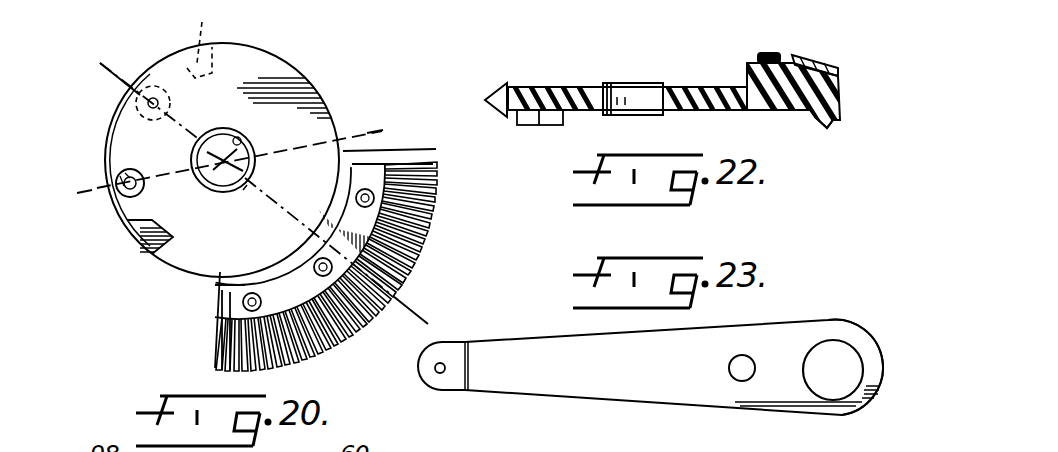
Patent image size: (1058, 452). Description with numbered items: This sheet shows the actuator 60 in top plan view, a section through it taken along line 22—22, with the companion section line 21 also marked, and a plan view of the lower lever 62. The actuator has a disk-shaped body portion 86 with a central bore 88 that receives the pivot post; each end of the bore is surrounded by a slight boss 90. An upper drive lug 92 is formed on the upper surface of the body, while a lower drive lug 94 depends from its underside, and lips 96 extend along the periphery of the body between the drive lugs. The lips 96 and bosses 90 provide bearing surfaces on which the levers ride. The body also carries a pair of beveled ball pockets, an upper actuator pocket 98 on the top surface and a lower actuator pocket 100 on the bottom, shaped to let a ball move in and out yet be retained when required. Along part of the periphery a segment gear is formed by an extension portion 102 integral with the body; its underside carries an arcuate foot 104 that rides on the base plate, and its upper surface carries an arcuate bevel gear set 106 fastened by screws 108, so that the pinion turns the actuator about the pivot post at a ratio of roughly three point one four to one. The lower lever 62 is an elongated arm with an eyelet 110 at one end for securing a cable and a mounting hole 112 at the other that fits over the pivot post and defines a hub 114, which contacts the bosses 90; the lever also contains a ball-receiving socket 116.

In FIG. 20, the section line 21- 21 is at (381, 95).
In FIG. 20, the section line 22— 22 is at (434, 300).
In FIG. 20, the actuator 60 is at (336, 80).
In FIG. 22, the actuator 60 is at (724, 80).
In FIG. 23, the lower lever 62 is at (622, 392).
In FIG. 20, the disk-shaped body portion 86 is at (283, 62).
In FIG. 22, the disk-shaped body portion 86 is at (720, 112).
In FIG. 20, the central bore 88 is at (246, 141).
In FIG. 22, the central bore 88 is at (643, 90).
In FIG. 20, the boss 90 is at (243, 197).
In FIG. 22, the boss 90 is at (604, 115).
In FIG. 20, the upper drive lug 92 is at (152, 250).
In FIG. 20, the lower drive lug 94 is at (205, 28).
In FIG. 22, the lower drive lug 94 is at (553, 124).
In FIG. 20, the lips 96 is at (107, 127).
In FIG. 22, the lips 96 is at (487, 99).
In FIG. 20, the upper actuator pocket 98 is at (146, 188).
In FIG. 20, the lower actuator pocket 100 is at (171, 101).
In FIG. 22, the lower actuator pocket 100 is at (527, 113).
In FIG. 20, the extension portion 102 is at (213, 300).
In FIG. 22, the extension portion 102 is at (807, 116).
In FIG. 22, the arcuate foot 104 is at (831, 131).
In FIG. 20, the arcuate bevel gear set 106 is at (238, 347).
In FIG. 22, the arcuate bevel gear set 106 is at (822, 54).
In FIG. 20, the screws 108 is at (251, 292).
In FIG. 22, the screws 108 is at (776, 53).
In FIG. 23, the eyelet 110 is at (444, 363).
In FIG. 23, the mounting hole 112 is at (824, 346).
In FIG. 23, the hub 114 is at (874, 348).
In FIG. 23, the ball-receiving socket 116 is at (746, 381).